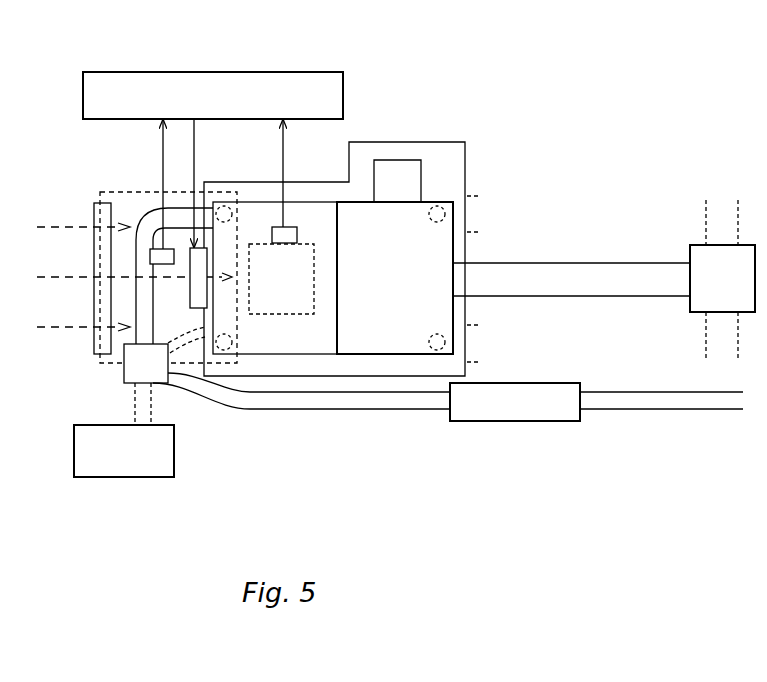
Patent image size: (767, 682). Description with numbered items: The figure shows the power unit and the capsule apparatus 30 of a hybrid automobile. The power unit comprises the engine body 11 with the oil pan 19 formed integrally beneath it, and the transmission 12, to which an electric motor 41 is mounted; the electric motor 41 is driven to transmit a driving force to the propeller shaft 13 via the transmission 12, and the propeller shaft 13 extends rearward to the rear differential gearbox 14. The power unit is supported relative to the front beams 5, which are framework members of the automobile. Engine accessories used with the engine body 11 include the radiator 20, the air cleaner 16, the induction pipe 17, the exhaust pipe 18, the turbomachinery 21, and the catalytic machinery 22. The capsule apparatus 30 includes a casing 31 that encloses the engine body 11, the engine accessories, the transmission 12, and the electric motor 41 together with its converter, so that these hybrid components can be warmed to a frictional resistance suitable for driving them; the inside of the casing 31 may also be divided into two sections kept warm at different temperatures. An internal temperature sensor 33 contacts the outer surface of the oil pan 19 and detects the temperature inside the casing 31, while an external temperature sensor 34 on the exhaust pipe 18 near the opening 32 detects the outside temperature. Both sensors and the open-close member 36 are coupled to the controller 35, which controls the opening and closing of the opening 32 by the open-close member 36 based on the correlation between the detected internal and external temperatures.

The front beam 5 is at (474, 215).
The engine body 11 is at (300, 333).
The transmission 12 is at (368, 335).
The propeller shaft 13 is at (586, 288).
The rear differential gearbox 14 is at (700, 303).
The air cleaner 16 is at (168, 464).
The induction pipe 17 is at (140, 398).
The exhaust pipe 18 is at (140, 301).
The oil pan 19 is at (265, 302).
The radiator 20 is at (93, 247).
The turbomachinery 21 is at (128, 367).
The catalytic machinery 22 is at (525, 405).
The capsule apparatus 30 is at (414, 101).
The casing 31 is at (453, 142).
The opening 32 is at (207, 275).
The internal temperature sensor 33 is at (297, 233).
The external temperature sensor 34 is at (158, 249).
The controller 35 is at (338, 108).
The open-close member 36 is at (190, 291).
The electric motor 41 is at (413, 185).